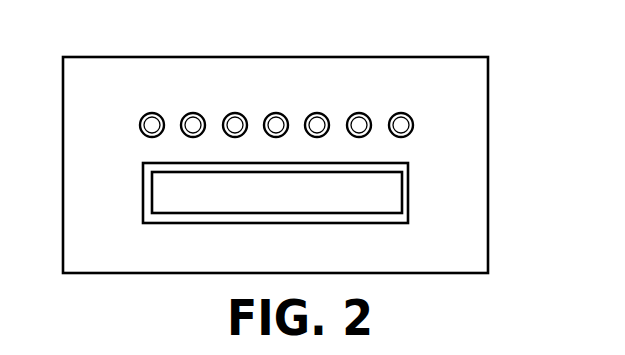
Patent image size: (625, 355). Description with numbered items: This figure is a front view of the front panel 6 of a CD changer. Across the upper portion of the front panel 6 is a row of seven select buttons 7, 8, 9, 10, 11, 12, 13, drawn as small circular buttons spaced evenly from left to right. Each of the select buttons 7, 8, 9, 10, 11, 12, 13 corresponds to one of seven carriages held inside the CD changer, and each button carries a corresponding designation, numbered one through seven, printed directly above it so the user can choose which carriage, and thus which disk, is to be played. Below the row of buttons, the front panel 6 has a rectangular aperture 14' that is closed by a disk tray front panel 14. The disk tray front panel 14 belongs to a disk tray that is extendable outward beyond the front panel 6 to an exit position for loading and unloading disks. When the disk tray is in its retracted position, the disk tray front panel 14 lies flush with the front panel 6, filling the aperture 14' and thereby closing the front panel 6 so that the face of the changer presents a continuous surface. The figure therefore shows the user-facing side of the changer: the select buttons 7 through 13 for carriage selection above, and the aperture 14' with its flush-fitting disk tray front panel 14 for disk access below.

The front panel 6 is at (485, 101).
The select button 7 is at (142, 119).
The select button 8 is at (184, 116).
The select button 9 is at (226, 117).
The select button 10 is at (268, 117).
The select button 11 is at (325, 117).
The select button 12 is at (366, 117).
The select button 13 is at (411, 120).
The disk tray front panel 14 is at (277, 216).
The aperture 14' is at (307, 193).